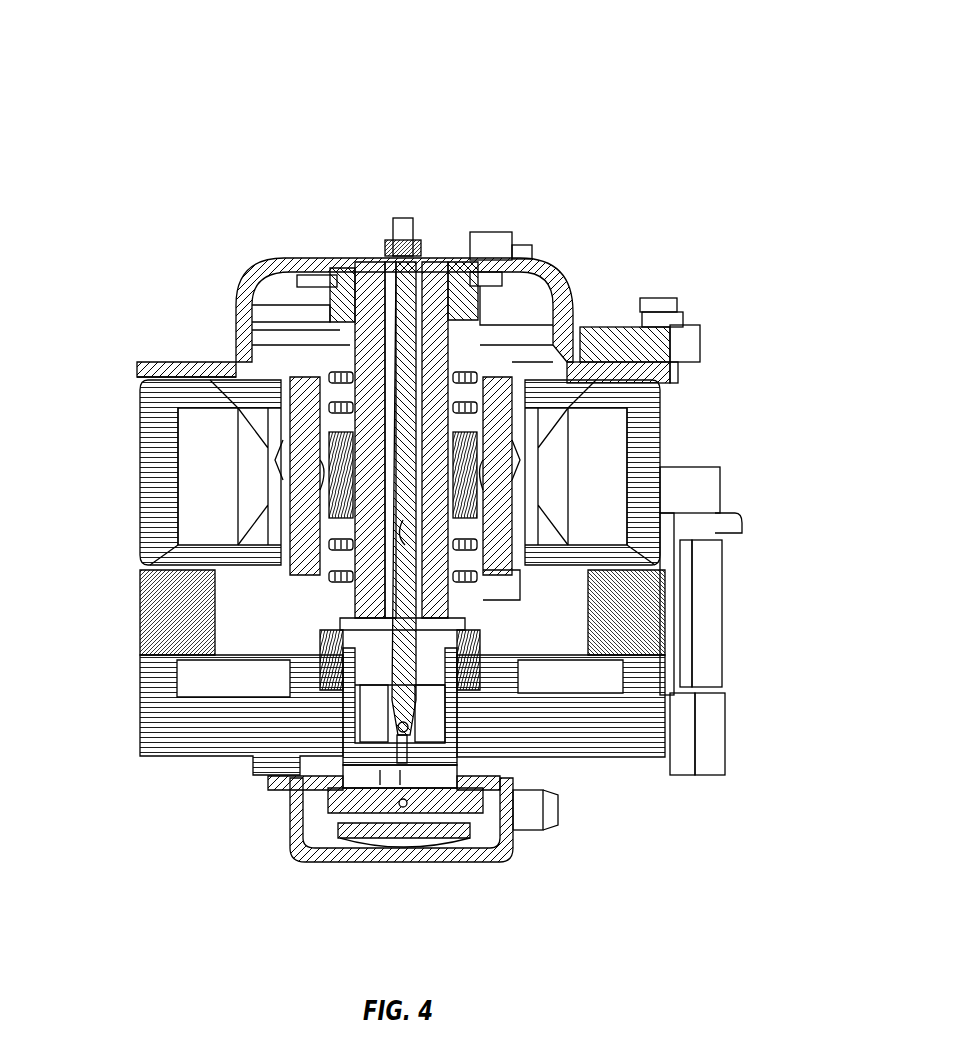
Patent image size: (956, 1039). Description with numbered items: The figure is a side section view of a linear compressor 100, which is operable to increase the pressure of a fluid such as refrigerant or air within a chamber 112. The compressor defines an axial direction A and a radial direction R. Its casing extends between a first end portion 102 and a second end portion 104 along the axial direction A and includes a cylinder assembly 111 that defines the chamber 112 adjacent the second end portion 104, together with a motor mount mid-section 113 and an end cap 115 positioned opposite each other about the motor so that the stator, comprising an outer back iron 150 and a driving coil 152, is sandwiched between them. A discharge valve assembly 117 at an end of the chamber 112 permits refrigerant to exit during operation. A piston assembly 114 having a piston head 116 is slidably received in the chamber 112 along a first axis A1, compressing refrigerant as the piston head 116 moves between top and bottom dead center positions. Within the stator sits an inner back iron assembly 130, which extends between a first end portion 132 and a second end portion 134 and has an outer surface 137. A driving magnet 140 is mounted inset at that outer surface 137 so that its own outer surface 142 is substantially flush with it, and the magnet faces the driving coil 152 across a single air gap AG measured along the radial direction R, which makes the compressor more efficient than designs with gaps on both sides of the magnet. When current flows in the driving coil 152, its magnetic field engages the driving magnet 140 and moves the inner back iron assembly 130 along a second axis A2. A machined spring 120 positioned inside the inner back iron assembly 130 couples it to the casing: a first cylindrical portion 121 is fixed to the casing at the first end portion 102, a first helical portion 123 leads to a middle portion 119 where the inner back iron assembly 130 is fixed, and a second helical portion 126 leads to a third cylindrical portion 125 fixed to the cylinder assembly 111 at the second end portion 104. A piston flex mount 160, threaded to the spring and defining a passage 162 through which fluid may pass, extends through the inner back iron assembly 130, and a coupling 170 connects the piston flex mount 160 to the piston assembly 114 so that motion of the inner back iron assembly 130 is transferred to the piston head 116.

The linear compressor 100 is at (732, 205).
The first end portion 102 is at (702, 316).
The second end portion 104 is at (735, 772).
The cylinder assembly 111 is at (575, 758).
The chamber 112 is at (380, 790).
The motor mount mid-section 113 is at (640, 628).
The piston assembly 114 is at (345, 728).
The end cap 115 is at (558, 285).
The piston head 116 is at (468, 822).
The discharge valve assembly 117 is at (292, 828).
The middle portion 119 is at (520, 442).
The machined spring 120 is at (285, 480).
The first cylindrical portion 121 is at (350, 268).
The first helical portion 123 is at (290, 320).
The third cylindrical portion 125 is at (332, 652).
The second helical portion 126 is at (475, 612).
The inner back iron assembly 130 is at (300, 555).
The first end portion 132 is at (515, 362).
The second end portion 134 is at (505, 585).
The outer surface 137 is at (245, 375).
The driving magnet 140 is at (280, 455).
The outer surface 142 is at (230, 520).
The outer back iron 150 is at (147, 440).
The driving coil 152 is at (210, 460).
The piston flex mount 160 is at (396, 258).
The passage 162 is at (455, 275).
The coupling 170 is at (432, 318).
The axial direction A is at (403, 82).
The radial direction R is at (402, 40).
The first axis A1 is at (403, 800).
The second axis A2 is at (403, 245).
The air gap AG is at (495, 465).